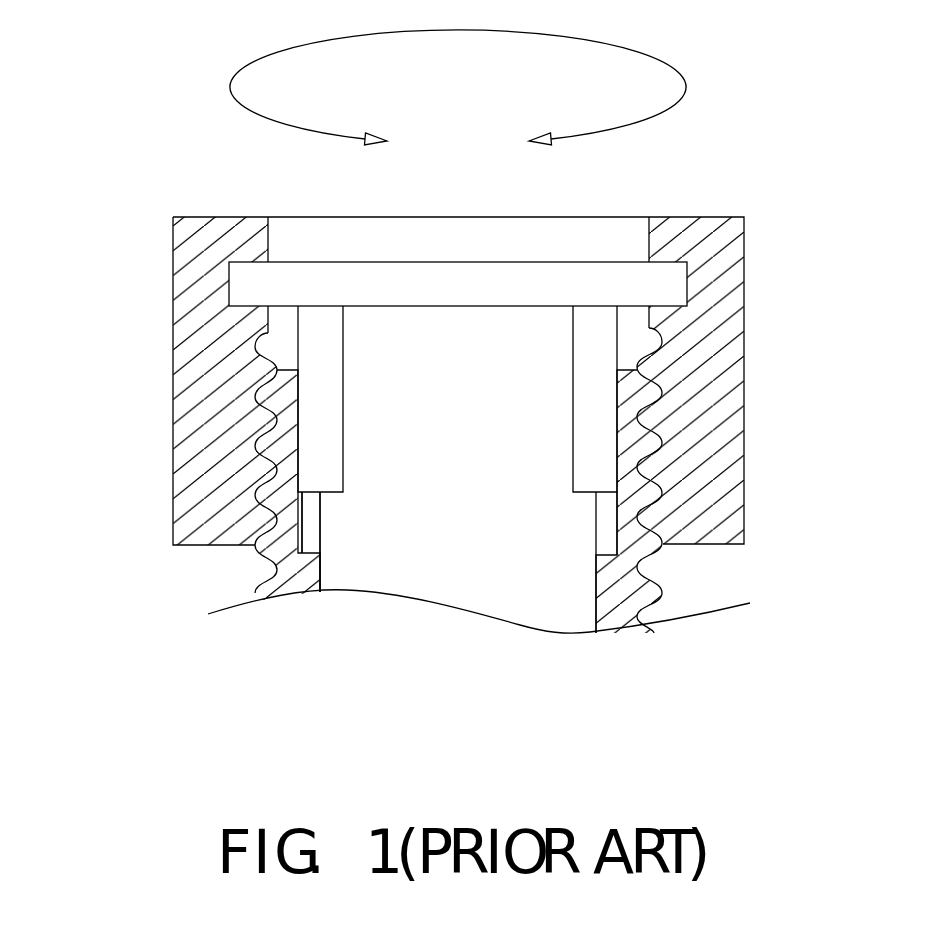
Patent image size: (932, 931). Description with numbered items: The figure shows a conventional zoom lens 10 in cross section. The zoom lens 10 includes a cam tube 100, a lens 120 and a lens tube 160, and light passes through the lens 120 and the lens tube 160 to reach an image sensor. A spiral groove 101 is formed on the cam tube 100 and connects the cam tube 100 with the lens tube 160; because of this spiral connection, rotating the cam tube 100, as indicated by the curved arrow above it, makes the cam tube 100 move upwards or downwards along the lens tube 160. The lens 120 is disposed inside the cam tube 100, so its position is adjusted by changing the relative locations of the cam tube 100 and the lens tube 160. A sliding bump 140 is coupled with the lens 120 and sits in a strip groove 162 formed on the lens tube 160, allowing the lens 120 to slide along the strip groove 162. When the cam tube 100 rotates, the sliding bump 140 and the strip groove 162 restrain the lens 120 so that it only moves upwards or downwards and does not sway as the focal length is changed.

The conventional zoom lens 10 is at (872, 45).
The cam tube 100 is at (738, 243).
The spiral groove 101 is at (663, 326).
The lens 120 is at (335, 262).
The sliding bump 140 is at (240, 333).
The lens tube 160 is at (663, 592).
The strip groove 162 is at (333, 543).